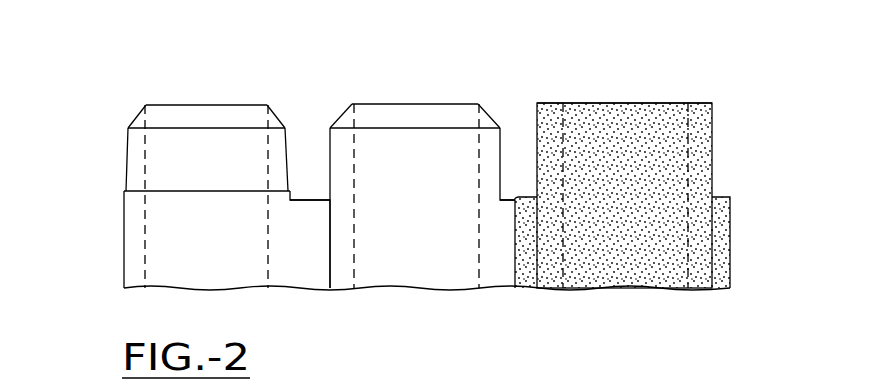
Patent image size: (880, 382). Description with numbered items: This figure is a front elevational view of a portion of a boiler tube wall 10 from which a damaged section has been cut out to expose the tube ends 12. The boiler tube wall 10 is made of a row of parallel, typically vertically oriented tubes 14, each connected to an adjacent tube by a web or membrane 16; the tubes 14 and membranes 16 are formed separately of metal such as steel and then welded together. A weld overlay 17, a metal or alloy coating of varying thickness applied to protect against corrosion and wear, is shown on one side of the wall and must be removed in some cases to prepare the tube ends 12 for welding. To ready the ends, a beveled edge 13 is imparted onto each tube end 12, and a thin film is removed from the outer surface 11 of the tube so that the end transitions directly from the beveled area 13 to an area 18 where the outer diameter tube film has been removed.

The boiler tube wall 10 is at (200, 50).
The outer surface of the tube 11 is at (124, 237).
The tube end 12 is at (199, 104).
The beveled edge 13 is at (143, 109).
The tube 14 is at (256, 97).
The membrane 16 is at (305, 278).
The weld overlay 17 is at (712, 130).
The area where the outer diameter tube film has been removed 18 is at (126, 162).